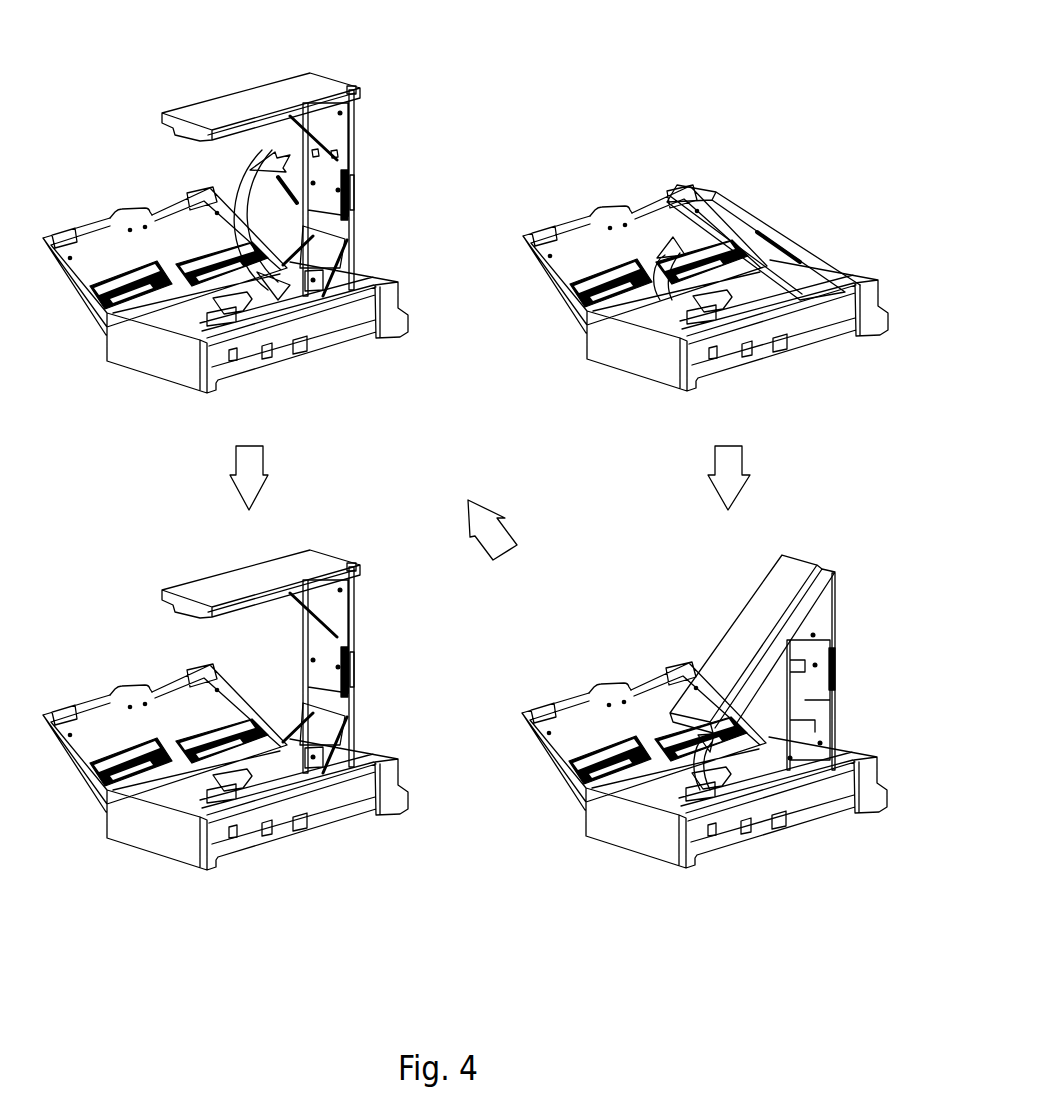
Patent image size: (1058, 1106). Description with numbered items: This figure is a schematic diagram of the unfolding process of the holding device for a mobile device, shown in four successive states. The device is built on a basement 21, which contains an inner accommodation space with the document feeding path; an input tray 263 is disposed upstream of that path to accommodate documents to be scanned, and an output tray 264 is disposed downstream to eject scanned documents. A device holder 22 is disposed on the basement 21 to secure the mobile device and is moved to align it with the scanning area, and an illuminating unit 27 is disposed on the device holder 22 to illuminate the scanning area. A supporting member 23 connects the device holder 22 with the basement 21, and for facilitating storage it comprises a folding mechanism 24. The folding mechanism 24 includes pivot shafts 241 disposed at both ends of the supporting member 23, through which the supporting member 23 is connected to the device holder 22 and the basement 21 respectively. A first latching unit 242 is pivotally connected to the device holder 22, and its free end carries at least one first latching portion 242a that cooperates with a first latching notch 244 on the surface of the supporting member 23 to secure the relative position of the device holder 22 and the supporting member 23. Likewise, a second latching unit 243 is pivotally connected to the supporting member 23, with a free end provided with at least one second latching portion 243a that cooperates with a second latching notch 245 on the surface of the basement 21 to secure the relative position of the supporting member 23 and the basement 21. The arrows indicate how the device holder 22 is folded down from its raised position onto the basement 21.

The basement 21 is at (391, 294).
The device holder 22 is at (232, 102).
The supporting member 23 is at (288, 188).
The folding mechanism 24 is at (477, 68).
The pivot shafts 241 is at (345, 292).
The first latching unit 242 is at (336, 112).
The first latching portion 242a is at (346, 138).
The second latching unit 243 is at (350, 232).
The second latching portion 243a is at (315, 184).
The first latching notch 244 is at (335, 157).
The second latching notch 245 is at (352, 262).
The input tray 263 is at (131, 227).
The output tray 264 is at (323, 334).
The illuminating unit 27 is at (342, 84).